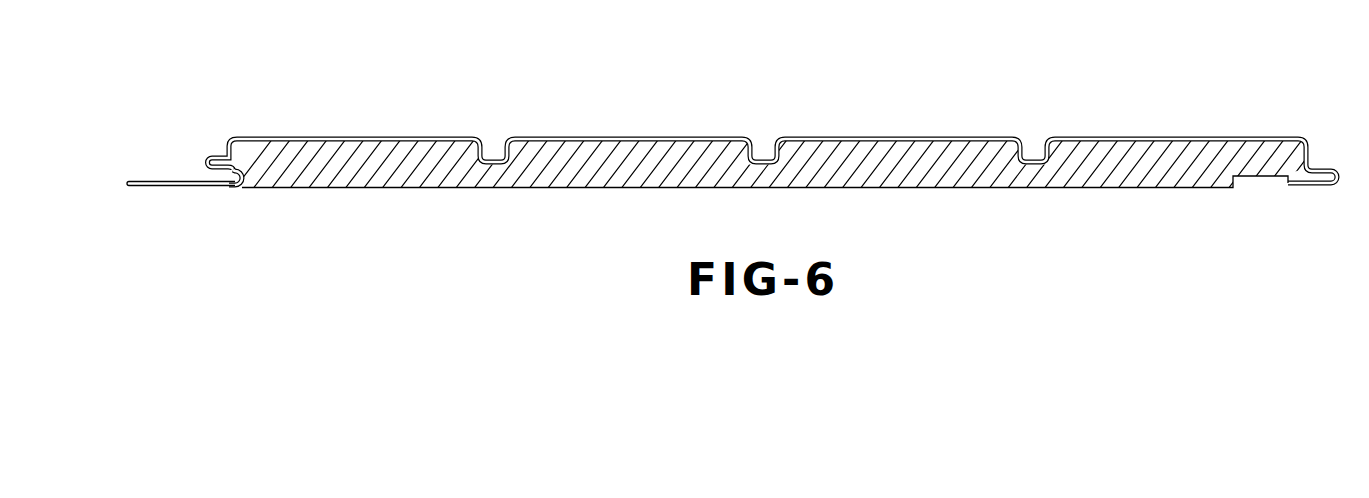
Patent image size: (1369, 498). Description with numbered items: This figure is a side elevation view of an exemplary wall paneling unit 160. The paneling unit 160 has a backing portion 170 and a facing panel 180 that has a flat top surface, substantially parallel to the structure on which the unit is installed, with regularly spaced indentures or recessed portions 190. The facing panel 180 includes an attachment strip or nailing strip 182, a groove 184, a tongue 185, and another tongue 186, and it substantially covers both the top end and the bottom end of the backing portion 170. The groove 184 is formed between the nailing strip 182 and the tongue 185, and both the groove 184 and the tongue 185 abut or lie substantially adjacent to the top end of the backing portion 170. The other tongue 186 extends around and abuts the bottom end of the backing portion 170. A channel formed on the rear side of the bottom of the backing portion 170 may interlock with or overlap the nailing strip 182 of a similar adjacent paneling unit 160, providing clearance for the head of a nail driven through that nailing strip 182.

The paneling unit 160 is at (773, 133).
The backing portion 170 is at (851, 188).
The facing panel 180 is at (856, 137).
The attachment strip or hem 182 is at (167, 181).
The groove 184 is at (229, 170).
The tongue 185 is at (220, 157).
The tongue 186 is at (1324, 177).
The recessed portion 190 is at (762, 157).